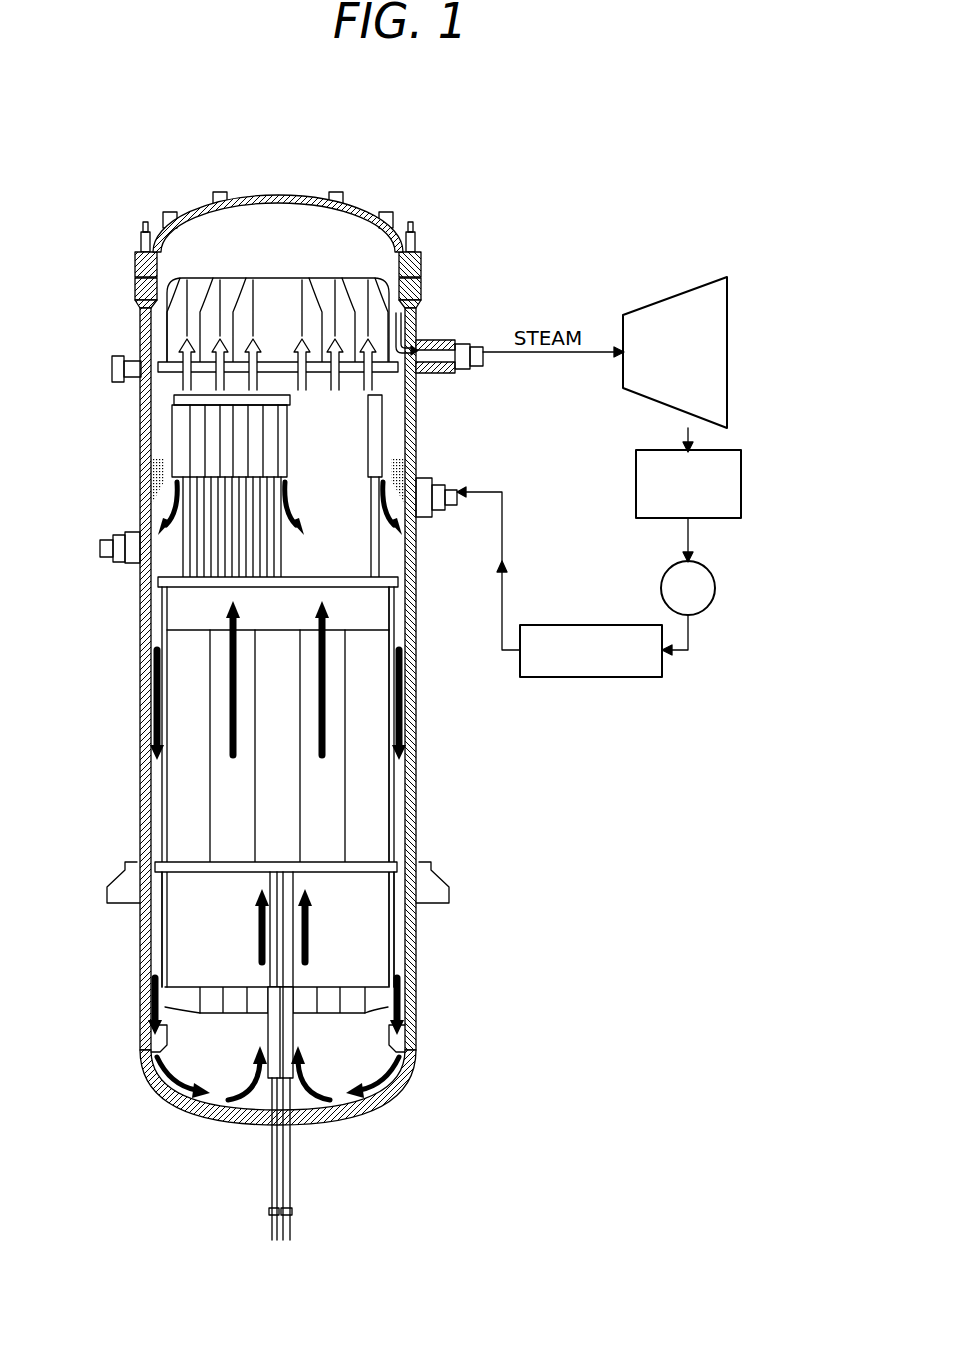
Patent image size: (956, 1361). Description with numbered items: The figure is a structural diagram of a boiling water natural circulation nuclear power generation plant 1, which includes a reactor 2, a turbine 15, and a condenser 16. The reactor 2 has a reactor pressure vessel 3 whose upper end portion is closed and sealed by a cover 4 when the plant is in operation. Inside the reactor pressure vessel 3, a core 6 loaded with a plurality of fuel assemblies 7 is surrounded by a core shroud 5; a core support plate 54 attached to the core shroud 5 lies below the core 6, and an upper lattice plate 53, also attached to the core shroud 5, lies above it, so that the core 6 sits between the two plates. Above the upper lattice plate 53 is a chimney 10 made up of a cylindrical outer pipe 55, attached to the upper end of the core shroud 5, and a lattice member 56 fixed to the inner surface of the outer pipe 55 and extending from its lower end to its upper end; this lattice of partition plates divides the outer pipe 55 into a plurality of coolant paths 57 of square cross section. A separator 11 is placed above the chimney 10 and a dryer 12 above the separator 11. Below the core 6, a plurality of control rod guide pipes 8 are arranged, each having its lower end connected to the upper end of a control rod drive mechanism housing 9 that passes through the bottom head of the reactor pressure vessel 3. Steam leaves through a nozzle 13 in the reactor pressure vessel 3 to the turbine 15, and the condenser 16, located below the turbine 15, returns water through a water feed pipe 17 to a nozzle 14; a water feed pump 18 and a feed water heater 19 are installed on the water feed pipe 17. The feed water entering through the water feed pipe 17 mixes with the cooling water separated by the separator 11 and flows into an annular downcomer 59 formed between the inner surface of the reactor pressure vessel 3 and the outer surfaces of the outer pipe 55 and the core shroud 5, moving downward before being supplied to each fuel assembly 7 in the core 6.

The natural circulation nuclear power generation plant 1 is at (343, 153).
The reactor 2 is at (148, 602).
The reactor pressure vessel 3 is at (415, 722).
The cover 4 is at (348, 208).
The core shroud 5 is at (162, 932).
The core 6 is at (373, 945).
The fuel assembly 7 is at (298, 888).
The control rod guide pipe 8 is at (298, 1028).
The control rod drive mechanism housing 9 is at (290, 1165).
The chimney 10 is at (410, 790).
The separator 11 is at (183, 434).
The dryer 12 is at (172, 310).
The nozzle 13 is at (445, 345).
The nozzle 14 is at (441, 490).
The turbine 15 is at (727, 340).
The condenser 16 is at (741, 478).
The water feed pipe 17 is at (503, 592).
The water feed pump 18 is at (710, 608).
The feed water heater 19 is at (591, 625).
The upper lattice plate 53 is at (178, 858).
The core support plate 54 is at (205, 1015).
The outer pipe 55 is at (165, 782).
The lattice member 56 is at (210, 690).
The coolant path 57 is at (335, 683).
The downcomer 59 is at (395, 834).